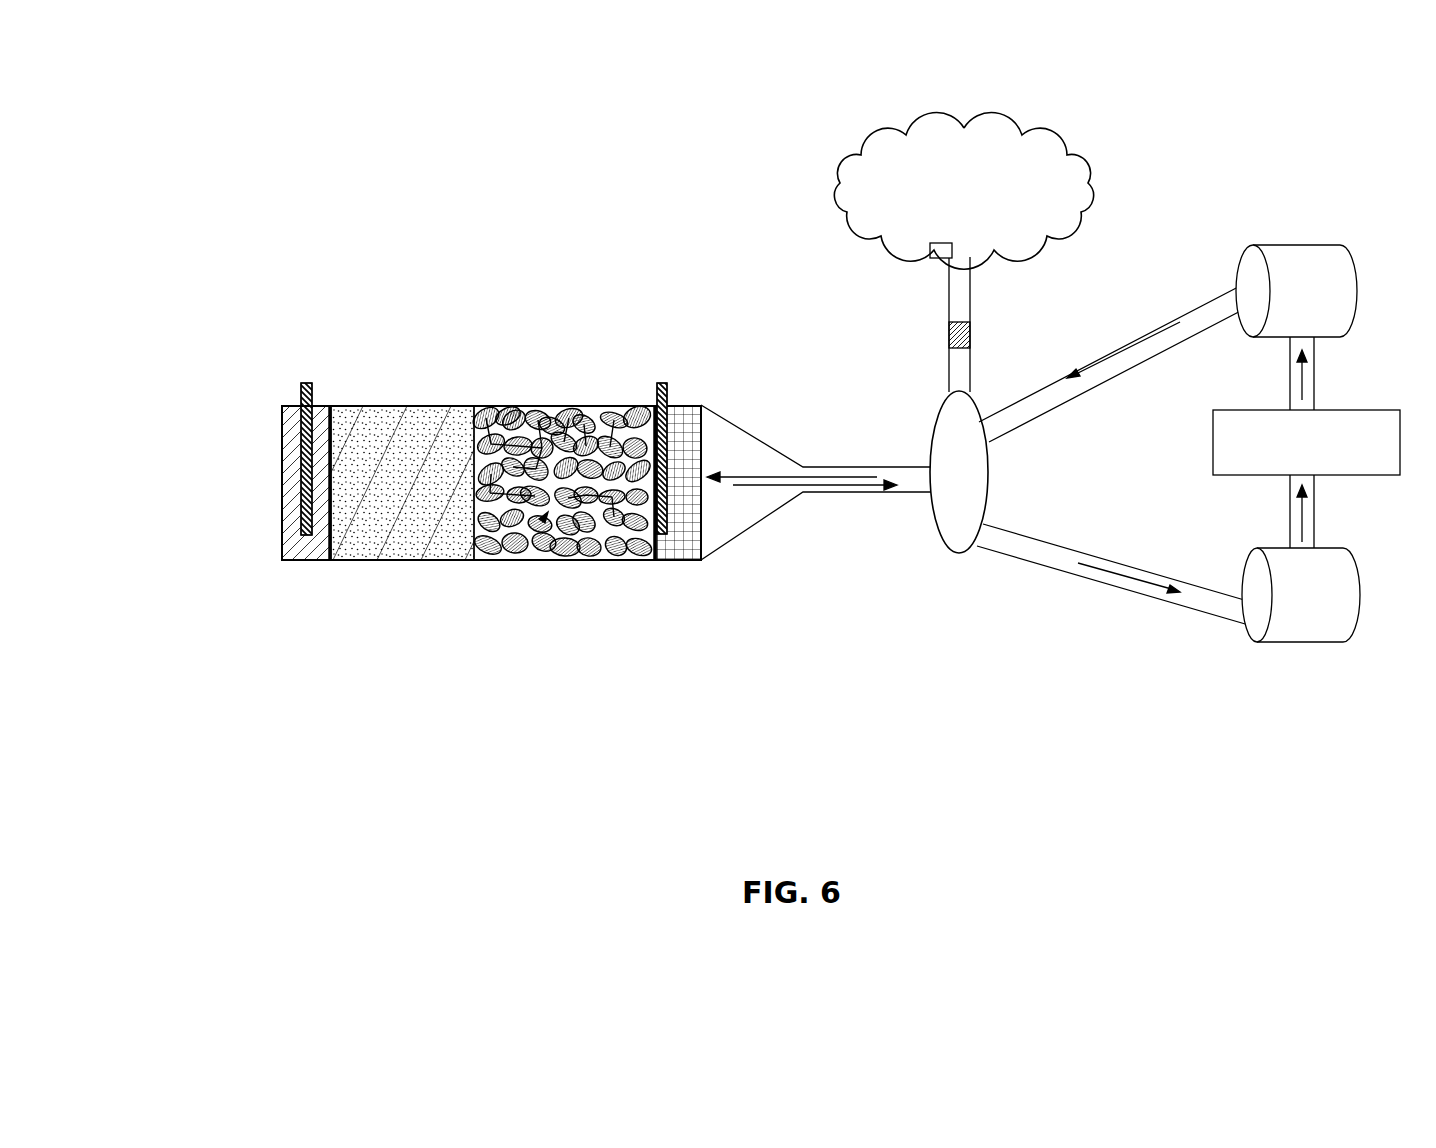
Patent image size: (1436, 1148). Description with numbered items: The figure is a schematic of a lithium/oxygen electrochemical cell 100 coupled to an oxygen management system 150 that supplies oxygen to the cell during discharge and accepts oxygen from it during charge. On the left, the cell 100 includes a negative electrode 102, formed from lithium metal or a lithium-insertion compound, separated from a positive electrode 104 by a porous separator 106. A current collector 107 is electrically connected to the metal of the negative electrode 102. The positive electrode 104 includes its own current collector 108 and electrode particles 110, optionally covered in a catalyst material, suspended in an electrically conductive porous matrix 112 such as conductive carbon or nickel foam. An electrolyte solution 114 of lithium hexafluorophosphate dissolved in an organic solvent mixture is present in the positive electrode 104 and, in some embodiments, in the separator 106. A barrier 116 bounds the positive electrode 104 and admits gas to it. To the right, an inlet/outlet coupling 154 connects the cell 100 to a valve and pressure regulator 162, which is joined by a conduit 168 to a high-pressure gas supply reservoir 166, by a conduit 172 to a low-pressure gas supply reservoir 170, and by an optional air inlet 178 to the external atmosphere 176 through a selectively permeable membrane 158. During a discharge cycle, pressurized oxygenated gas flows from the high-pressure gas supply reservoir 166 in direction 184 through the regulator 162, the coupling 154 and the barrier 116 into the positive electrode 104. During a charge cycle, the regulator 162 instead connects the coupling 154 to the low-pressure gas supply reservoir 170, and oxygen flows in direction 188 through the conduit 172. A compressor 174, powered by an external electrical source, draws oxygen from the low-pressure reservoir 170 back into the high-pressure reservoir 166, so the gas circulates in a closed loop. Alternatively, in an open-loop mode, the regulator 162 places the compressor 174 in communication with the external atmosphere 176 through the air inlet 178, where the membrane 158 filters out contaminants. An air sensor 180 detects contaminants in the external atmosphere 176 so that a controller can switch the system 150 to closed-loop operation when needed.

The electrochemical cell 100 is at (463, 463).
The negative electrode 102 is at (282, 482).
The positive electrode 104 is at (563, 562).
The porous separator 106 is at (368, 406).
The current collector 107 is at (304, 382).
The current collector 108 is at (665, 383).
The electrode particles 110 is at (507, 408).
The porous matrix 112 is at (547, 418).
The electrolyte solution 114 is at (546, 516).
The barrier 116 is at (675, 562).
The oxygen management system 150 is at (1051, 427).
The inlet/outlet coupling 154 is at (808, 493).
The selectively permeable membrane 158 is at (952, 337).
The valve and pressure regulator 162 is at (943, 557).
The high-pressure gas supply reservoir 166 is at (1275, 245).
The conduit 168 is at (1040, 372).
The low-pressure gas supply reservoir 170 is at (1337, 548).
The conduit 172 is at (1062, 570).
The compressor 174 is at (1343, 412).
The external atmosphere 176 is at (927, 145).
The air inlet 178 is at (970, 303).
The air sensor 180 is at (942, 262).
The direction 184 is at (757, 477).
The direction 188 is at (757, 480).